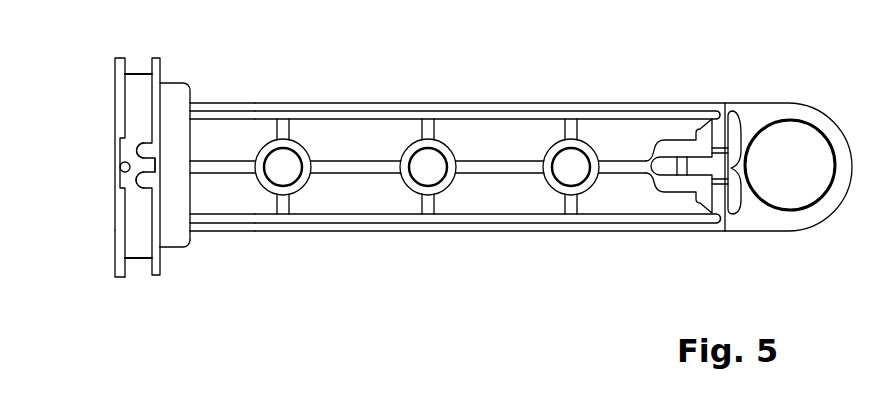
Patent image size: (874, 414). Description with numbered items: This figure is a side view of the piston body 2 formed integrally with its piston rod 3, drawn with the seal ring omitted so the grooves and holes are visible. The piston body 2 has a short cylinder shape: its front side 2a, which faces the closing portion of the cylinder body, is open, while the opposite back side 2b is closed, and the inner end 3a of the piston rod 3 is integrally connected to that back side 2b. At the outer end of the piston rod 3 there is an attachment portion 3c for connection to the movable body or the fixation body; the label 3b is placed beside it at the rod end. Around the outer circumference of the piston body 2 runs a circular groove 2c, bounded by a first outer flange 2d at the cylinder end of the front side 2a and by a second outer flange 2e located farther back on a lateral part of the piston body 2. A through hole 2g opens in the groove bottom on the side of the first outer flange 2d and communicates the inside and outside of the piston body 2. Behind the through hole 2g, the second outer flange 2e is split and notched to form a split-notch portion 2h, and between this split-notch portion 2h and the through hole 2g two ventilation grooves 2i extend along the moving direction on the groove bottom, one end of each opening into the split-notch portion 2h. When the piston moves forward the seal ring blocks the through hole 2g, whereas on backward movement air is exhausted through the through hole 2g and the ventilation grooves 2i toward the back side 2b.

The piston body 2 is at (168, 247).
The front side 2a is at (115, 230).
The back side 2b is at (192, 198).
The circular groove 2c is at (137, 250).
The first outer flange 2d is at (113, 276).
The second outer flange 2e is at (157, 277).
The through hole 2g is at (118, 167).
The split-notch portion 2h is at (160, 163).
The ventilation grooves 2i is at (160, 152).
The piston rod 3 is at (493, 133).
The inner end 3a is at (190, 188).
The hole 3b is at (825, 103).
The attachment portion 3c is at (734, 162).